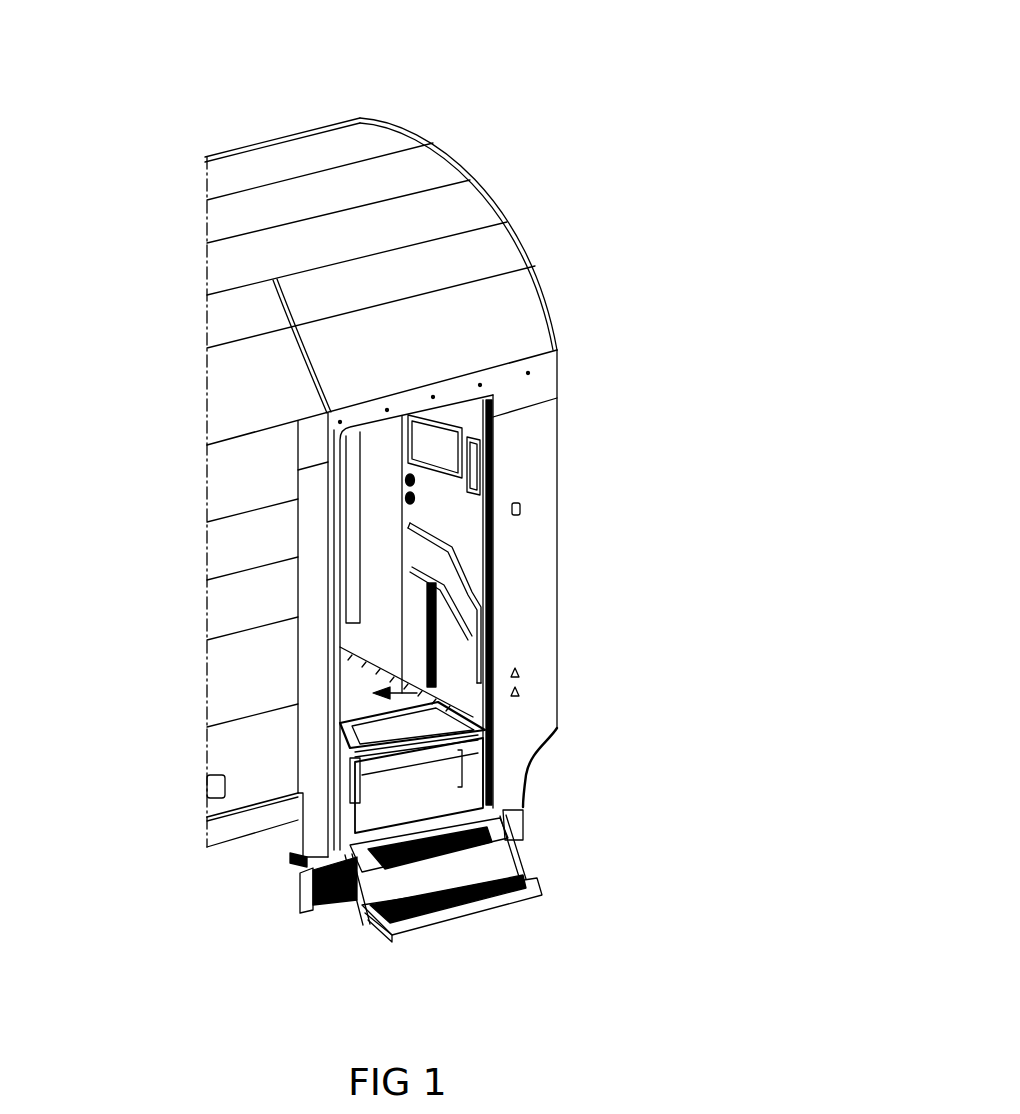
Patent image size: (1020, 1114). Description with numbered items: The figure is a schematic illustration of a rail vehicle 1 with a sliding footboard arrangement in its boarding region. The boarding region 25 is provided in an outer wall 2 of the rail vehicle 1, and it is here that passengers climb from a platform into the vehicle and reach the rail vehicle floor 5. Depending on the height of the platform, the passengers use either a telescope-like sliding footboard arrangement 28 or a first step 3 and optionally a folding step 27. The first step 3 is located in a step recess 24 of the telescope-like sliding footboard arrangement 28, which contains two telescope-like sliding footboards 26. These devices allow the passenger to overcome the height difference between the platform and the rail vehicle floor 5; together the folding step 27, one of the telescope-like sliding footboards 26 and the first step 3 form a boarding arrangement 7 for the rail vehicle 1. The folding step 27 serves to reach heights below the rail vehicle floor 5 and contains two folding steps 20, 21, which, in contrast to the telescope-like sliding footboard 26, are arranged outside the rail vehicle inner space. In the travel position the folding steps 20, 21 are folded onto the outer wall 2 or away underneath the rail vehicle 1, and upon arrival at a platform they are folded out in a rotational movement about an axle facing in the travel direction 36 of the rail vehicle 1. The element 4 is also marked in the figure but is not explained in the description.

The rail vehicle 1 is at (657, 210).
The outer wall 2 is at (232, 592).
The first step 3 is at (455, 800).
The door jamb 4 is at (367, 798).
The rail vehicle floor 5 is at (478, 643).
The boarding arrangement 7 is at (507, 762).
The folding step 20 is at (513, 860).
The folding step 21 is at (520, 900).
The step recess 24 is at (485, 730).
The boarding region 25 is at (327, 780).
The telescope-like sliding footboard 26 is at (343, 650).
The folding step 27 is at (288, 863).
The telescope-like sliding footboard arrangement 28 is at (447, 674).
The travel direction 36 is at (510, 832).